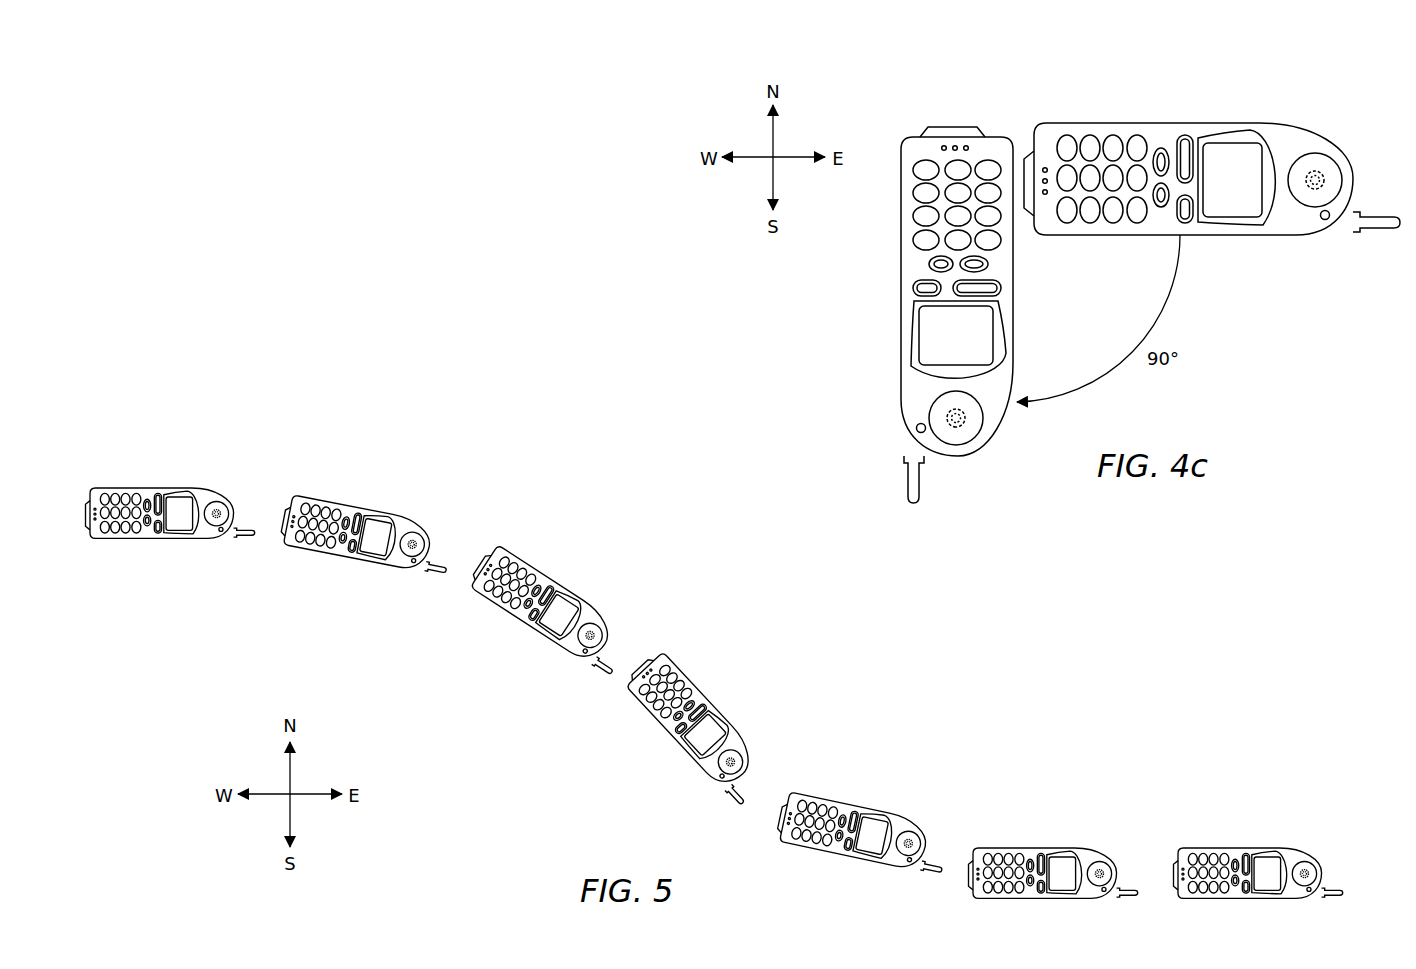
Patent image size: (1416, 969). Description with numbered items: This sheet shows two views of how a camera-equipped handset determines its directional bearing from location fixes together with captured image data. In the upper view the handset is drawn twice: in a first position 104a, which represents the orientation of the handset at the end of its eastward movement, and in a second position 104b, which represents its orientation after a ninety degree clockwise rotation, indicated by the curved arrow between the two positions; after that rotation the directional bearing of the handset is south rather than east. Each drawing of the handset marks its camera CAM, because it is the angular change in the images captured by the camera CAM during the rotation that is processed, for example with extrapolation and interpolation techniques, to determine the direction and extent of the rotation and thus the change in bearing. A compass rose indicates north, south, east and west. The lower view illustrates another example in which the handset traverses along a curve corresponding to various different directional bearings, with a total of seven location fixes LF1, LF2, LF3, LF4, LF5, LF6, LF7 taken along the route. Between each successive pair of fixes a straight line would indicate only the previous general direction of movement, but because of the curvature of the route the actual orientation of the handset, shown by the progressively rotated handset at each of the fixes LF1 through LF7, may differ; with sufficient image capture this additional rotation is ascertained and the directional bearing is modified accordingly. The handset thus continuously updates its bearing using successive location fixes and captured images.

In FIG. 4c, the handset position 104a is at (1104, 123).
In FIG. 4c, the handset position 104b is at (904, 291).
In FIG. 4c, the camera CAM is at (1308, 167).
In FIG. 5, the location fix LF1 is at (155, 549).
In FIG. 5, the location fix LF2 is at (354, 568).
In FIG. 5, the location fix LF3 is at (503, 627).
In FIG. 5, the location fix LF4 is at (632, 738).
In FIG. 5, the location fix LF5 is at (863, 787).
In FIG. 5, the location fix LF6 is at (1038, 830).
In FIG. 5, the location fix LF7 is at (1239, 830).